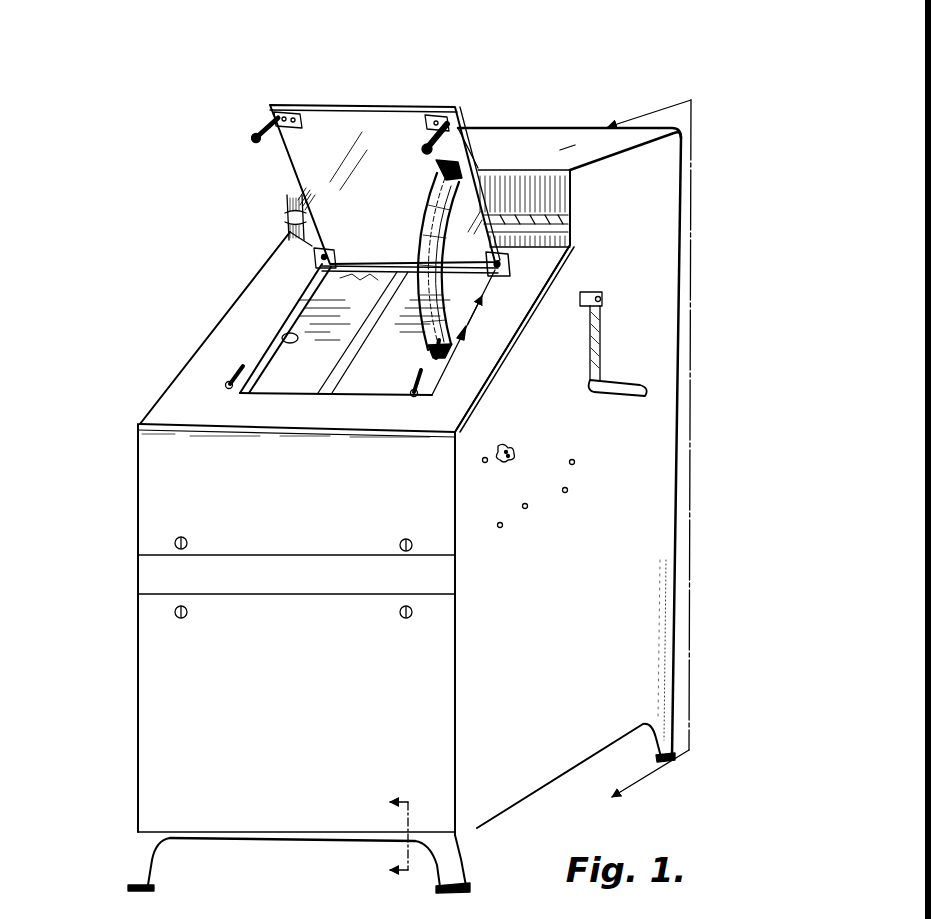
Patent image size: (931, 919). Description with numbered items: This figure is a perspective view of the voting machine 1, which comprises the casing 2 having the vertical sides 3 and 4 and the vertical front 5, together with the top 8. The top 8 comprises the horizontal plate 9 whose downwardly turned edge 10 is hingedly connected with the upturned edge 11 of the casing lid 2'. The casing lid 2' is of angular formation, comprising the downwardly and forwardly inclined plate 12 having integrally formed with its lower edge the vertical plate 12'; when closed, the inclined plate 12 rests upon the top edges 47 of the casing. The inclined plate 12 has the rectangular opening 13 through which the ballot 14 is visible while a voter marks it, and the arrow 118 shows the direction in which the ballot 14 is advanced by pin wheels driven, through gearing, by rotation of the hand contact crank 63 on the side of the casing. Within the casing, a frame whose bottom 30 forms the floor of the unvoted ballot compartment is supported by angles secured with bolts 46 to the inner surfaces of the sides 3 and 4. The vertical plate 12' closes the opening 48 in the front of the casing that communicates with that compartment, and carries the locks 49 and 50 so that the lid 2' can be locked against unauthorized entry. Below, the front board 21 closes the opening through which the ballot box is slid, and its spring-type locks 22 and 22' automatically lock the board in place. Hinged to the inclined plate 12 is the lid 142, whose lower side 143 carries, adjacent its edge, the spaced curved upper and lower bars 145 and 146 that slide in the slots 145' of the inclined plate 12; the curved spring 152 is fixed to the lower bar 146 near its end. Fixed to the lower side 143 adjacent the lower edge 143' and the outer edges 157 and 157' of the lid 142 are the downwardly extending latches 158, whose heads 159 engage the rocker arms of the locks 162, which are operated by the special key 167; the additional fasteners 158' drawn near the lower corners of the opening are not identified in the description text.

The voting machine 1 is at (650, 304).
The casing 2 is at (656, 457).
The casing lid 2' is at (282, 401).
The vertical side 3 is at (137, 492).
The vertical side 4 is at (655, 567).
The vertical front 5 is at (162, 576).
The top 8 is at (562, 145).
The horizontal plate 9 is at (490, 148).
The downwardly turned edge 10 is at (548, 198).
The upturned edge 11 is at (556, 238).
The inclined plate 12 is at (226, 328).
The vertical plate 12' is at (257, 442).
The rectangular opening 13 is at (288, 340).
The ballot 14 is at (290, 368).
The front board 21 is at (162, 688).
The lock 22 is at (129, 620).
The lock 22' is at (468, 621).
The bottom of the frame 30 is at (381, 835).
The bolts 46 is at (527, 509).
The top edges of the casing 47 is at (478, 404).
The opening 48 is at (327, 540).
The lock 49 is at (172, 538).
The lock 50 is at (418, 545).
The hand contact crank 63 is at (596, 354).
The arrow 118 is at (476, 322).
The lid 142 is at (382, 120).
The lower side of the lid 143 is at (262, 193).
The lower edge of the lid 143' is at (390, 138).
The curved upper bar 145 is at (400, 272).
The slots 145' is at (463, 359).
The curved lower bar 146 is at (430, 198).
The curved spring 152 is at (510, 267).
The outer edge of the lid 157 is at (277, 74).
The outer edge of the lid 157' is at (463, 75).
The latches 158 is at (293, 128).
The screw 158' is at (337, 395).
The heads of the latches 159 is at (252, 140).
The locks 162 is at (490, 466).
The key 167 is at (516, 452).